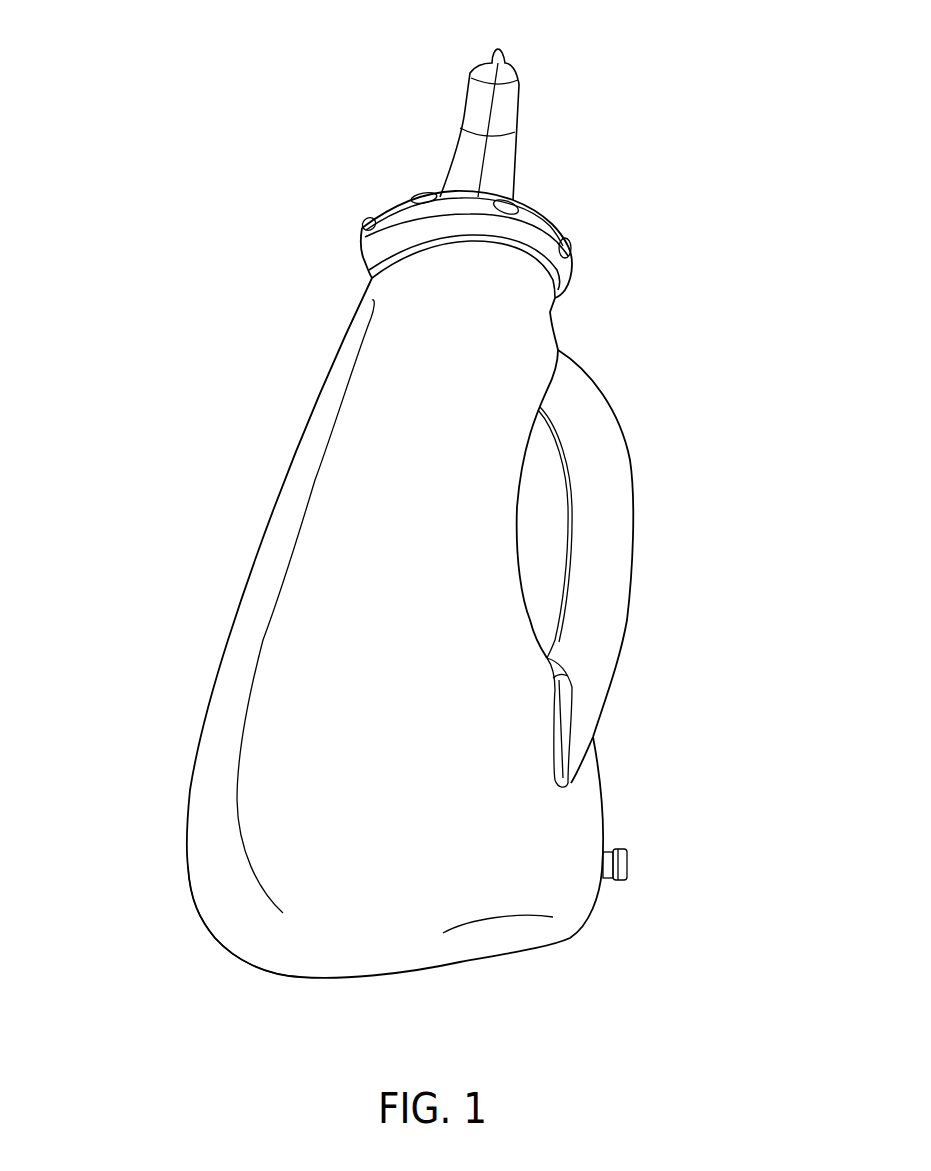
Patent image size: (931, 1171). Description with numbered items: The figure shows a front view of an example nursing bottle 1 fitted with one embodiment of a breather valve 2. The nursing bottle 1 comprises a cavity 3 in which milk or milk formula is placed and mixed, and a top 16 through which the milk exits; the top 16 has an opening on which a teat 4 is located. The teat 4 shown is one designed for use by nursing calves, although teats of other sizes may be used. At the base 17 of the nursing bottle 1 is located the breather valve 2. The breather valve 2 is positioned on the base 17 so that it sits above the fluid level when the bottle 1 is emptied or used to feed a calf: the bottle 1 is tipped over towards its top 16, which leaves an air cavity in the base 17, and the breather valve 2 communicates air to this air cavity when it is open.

The nursing bottle 1 is at (410, 489).
The breather valve 2 is at (632, 865).
The cavity 3 is at (333, 736).
The teat 4 is at (514, 68).
The top 16 is at (330, 215).
The base 17 is at (167, 887).